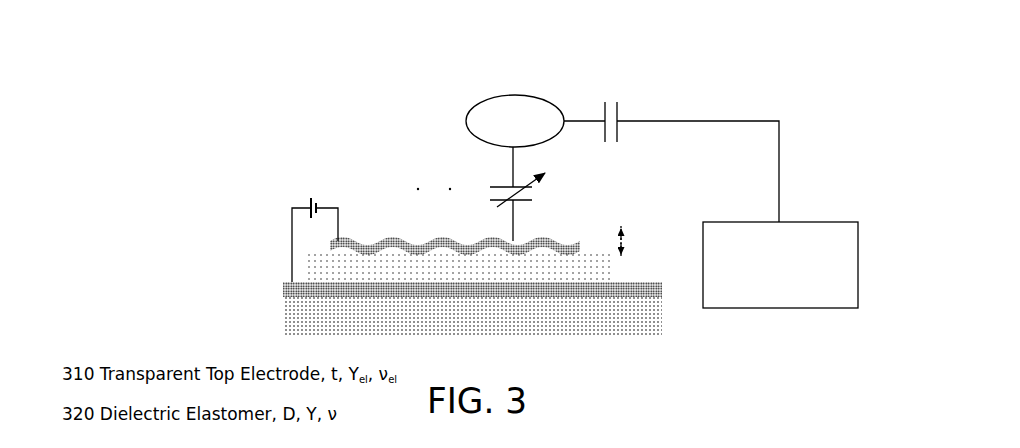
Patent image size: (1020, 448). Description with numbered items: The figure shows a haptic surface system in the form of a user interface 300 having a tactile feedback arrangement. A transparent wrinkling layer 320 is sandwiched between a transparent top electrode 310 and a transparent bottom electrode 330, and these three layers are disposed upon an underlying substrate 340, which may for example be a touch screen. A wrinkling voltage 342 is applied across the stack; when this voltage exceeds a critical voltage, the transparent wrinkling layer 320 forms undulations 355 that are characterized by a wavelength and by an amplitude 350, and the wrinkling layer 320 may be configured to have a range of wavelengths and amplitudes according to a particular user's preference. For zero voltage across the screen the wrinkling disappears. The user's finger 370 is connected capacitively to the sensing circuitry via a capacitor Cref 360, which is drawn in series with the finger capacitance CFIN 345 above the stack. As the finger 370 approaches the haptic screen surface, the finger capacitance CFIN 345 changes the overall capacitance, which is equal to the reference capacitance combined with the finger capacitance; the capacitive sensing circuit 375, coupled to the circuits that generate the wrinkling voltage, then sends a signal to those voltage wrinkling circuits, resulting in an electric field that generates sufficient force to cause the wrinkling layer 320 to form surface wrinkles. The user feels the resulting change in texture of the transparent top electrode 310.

The user interface 300 is at (132, 59).
The transparent top electrode 310 is at (330, 242).
The transparent wrinkling layer 320 is at (323, 267).
The transparent bottom electrode 330 is at (280, 288).
The substrate 340 is at (280, 310).
The wrinkling voltage 342 is at (307, 170).
The finger capacitance CFIN 345 is at (575, 193).
The amplitude 350 is at (640, 256).
The undulations 355 is at (432, 173).
The capacitor Cref 360 is at (629, 94).
The finger 370 is at (513, 122).
The capacitive sensing circuit 375 is at (780, 265).